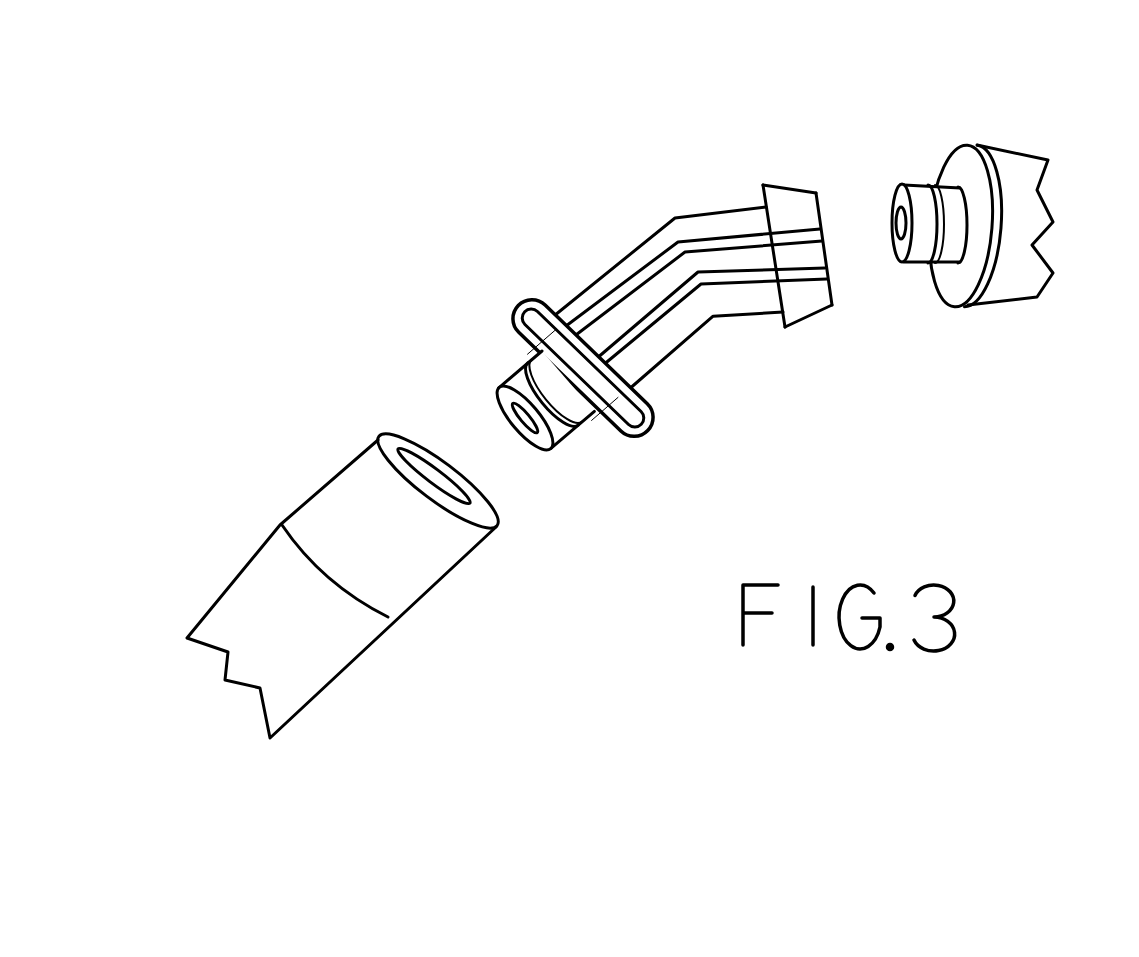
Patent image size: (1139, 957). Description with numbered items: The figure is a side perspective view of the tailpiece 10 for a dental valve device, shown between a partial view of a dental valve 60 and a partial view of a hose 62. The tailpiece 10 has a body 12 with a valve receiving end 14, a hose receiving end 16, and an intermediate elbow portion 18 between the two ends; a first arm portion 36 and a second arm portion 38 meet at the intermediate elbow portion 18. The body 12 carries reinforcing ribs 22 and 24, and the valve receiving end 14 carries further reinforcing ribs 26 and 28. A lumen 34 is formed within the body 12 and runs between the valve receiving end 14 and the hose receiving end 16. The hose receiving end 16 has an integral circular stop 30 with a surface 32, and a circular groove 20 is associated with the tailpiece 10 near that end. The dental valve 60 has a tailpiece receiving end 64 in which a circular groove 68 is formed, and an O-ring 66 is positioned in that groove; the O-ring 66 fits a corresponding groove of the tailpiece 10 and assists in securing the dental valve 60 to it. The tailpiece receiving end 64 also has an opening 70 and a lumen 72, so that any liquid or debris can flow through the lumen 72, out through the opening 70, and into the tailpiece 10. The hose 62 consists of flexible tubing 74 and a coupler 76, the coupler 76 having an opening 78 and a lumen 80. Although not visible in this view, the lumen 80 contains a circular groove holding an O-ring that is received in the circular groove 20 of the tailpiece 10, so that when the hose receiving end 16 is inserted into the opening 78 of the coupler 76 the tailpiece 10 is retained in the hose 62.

The tailpiece 10 is at (658, 157).
The body 12 is at (703, 200).
The valve receiving end 14 is at (803, 167).
The hose receiving end 16 is at (578, 453).
The intermediate elbow portion 18 is at (720, 335).
The circular groove 20 is at (528, 362).
The reinforcing rib 22 is at (617, 297).
The reinforcing rib 24 is at (638, 328).
The reinforcing rib 26 is at (792, 240).
The reinforcing rib 28 is at (798, 270).
The integral circular stop 30 is at (520, 300).
The surface 32 is at (623, 417).
The lumen 34 is at (520, 423).
The first arm portion 36 is at (752, 302).
The second arm portion 38 is at (643, 262).
The dental valve 60 is at (1020, 118).
The hose 62 is at (257, 458).
The tailpiece receiving end 64 is at (897, 142).
The O-ring 66 is at (939, 195).
The circular groove 68 is at (935, 263).
The opening 70 is at (900, 205).
The lumen 72 is at (897, 240).
The flexible tubing 74 is at (302, 667).
The coupler 76 is at (397, 572).
The opening 78 is at (473, 507).
The lumen 80 is at (423, 470).